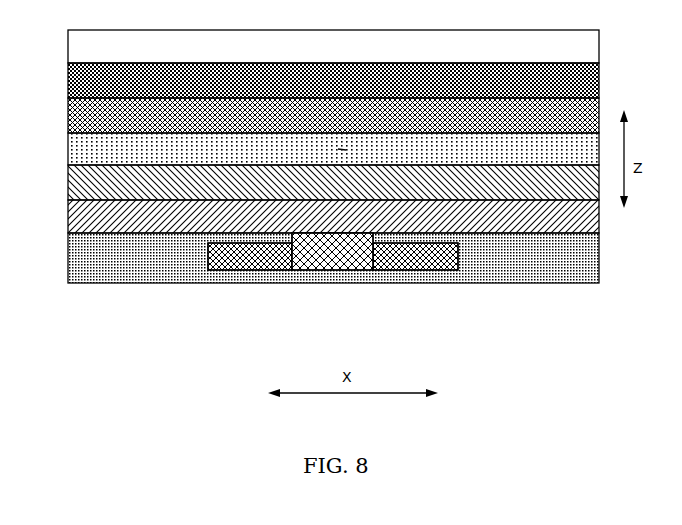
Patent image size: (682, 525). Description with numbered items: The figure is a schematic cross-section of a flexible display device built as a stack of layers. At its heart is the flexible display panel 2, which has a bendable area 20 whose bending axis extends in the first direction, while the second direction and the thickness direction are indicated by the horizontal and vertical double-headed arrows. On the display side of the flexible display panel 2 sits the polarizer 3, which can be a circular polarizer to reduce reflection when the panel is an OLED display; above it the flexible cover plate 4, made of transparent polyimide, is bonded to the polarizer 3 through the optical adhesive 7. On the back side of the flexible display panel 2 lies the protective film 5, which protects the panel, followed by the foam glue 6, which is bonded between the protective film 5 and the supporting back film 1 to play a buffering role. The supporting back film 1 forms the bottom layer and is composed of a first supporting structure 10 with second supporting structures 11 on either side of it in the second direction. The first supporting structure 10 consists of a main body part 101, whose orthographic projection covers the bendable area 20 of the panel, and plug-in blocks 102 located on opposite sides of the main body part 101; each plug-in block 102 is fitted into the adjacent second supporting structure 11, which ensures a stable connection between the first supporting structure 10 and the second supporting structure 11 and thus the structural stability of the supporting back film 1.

The supporting back film 1 is at (311, 281).
The flexible display panel 2 is at (68, 156).
The polarizer 3 is at (68, 121).
The flexible cover plate 4 is at (68, 45).
The protective film 5 is at (68, 184).
The foam glue 6 is at (68, 219).
The optical adhesive 7 is at (68, 83).
The first supporting structure 10 is at (333, 297).
The second supporting structure 11 is at (161, 283).
The bendable area 20 is at (346, 150).
The main body part 101 is at (332, 274).
The plug-in block 102 is at (265, 270).